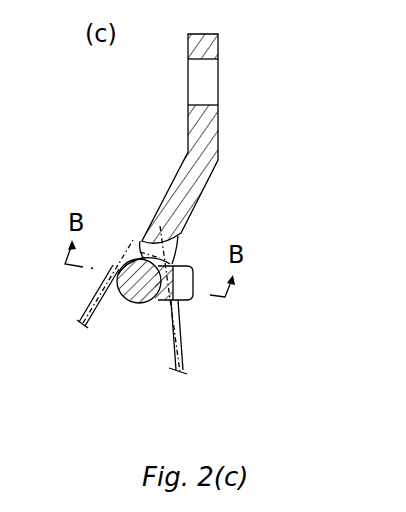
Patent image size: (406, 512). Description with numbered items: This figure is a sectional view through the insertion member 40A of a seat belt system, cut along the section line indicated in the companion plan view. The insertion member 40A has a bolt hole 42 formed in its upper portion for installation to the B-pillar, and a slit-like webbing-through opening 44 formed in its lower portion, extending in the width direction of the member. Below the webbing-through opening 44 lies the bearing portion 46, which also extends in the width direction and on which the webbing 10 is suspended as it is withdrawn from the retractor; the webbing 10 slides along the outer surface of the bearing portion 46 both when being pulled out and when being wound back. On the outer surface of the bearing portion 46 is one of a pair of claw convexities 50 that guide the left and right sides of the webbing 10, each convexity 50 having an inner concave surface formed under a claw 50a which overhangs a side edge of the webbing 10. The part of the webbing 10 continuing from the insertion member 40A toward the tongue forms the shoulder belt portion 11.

The insertion member 40A is at (164, 106).
The bolt hole 42 is at (204, 82).
The webbing-through opening 44 is at (140, 230).
The bearing portion 46 is at (125, 303).
The claw convexity 50 is at (190, 255).
The claw 50a is at (197, 303).
The webbing 10 is at (164, 352).
The shoulder belt portion 11 is at (85, 310).